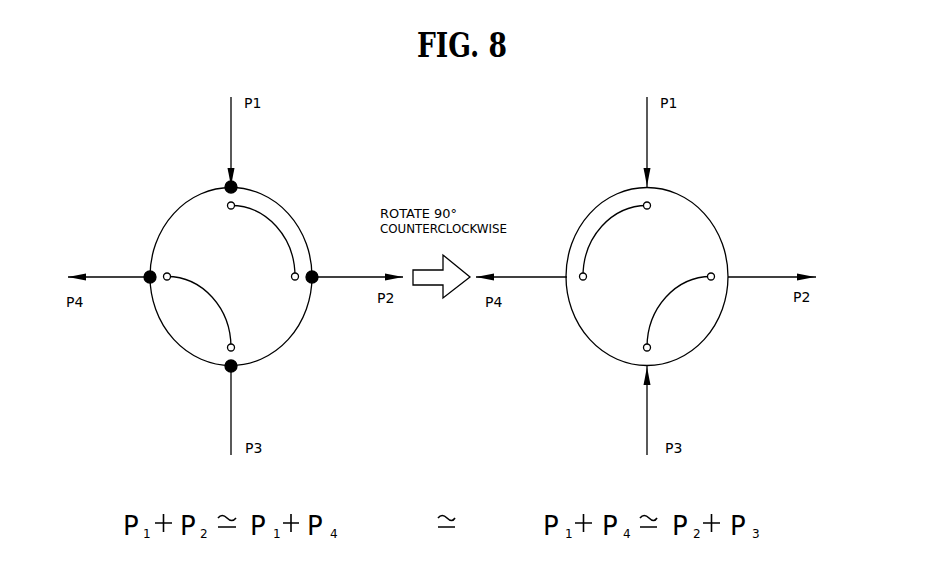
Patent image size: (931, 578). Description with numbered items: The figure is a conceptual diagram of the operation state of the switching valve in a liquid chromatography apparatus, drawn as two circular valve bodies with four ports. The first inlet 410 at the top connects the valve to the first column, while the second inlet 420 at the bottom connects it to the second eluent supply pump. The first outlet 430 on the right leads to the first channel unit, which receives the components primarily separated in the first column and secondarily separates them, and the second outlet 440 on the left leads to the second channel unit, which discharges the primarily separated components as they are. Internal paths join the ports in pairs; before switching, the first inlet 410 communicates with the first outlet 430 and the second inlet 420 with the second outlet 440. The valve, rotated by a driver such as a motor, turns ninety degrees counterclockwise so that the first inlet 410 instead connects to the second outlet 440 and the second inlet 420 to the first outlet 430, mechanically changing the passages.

The first inlet 410 is at (228, 184).
The second inlet 420 is at (240, 371).
The first outlet 430 is at (313, 270).
The second outlet 440 is at (148, 269).